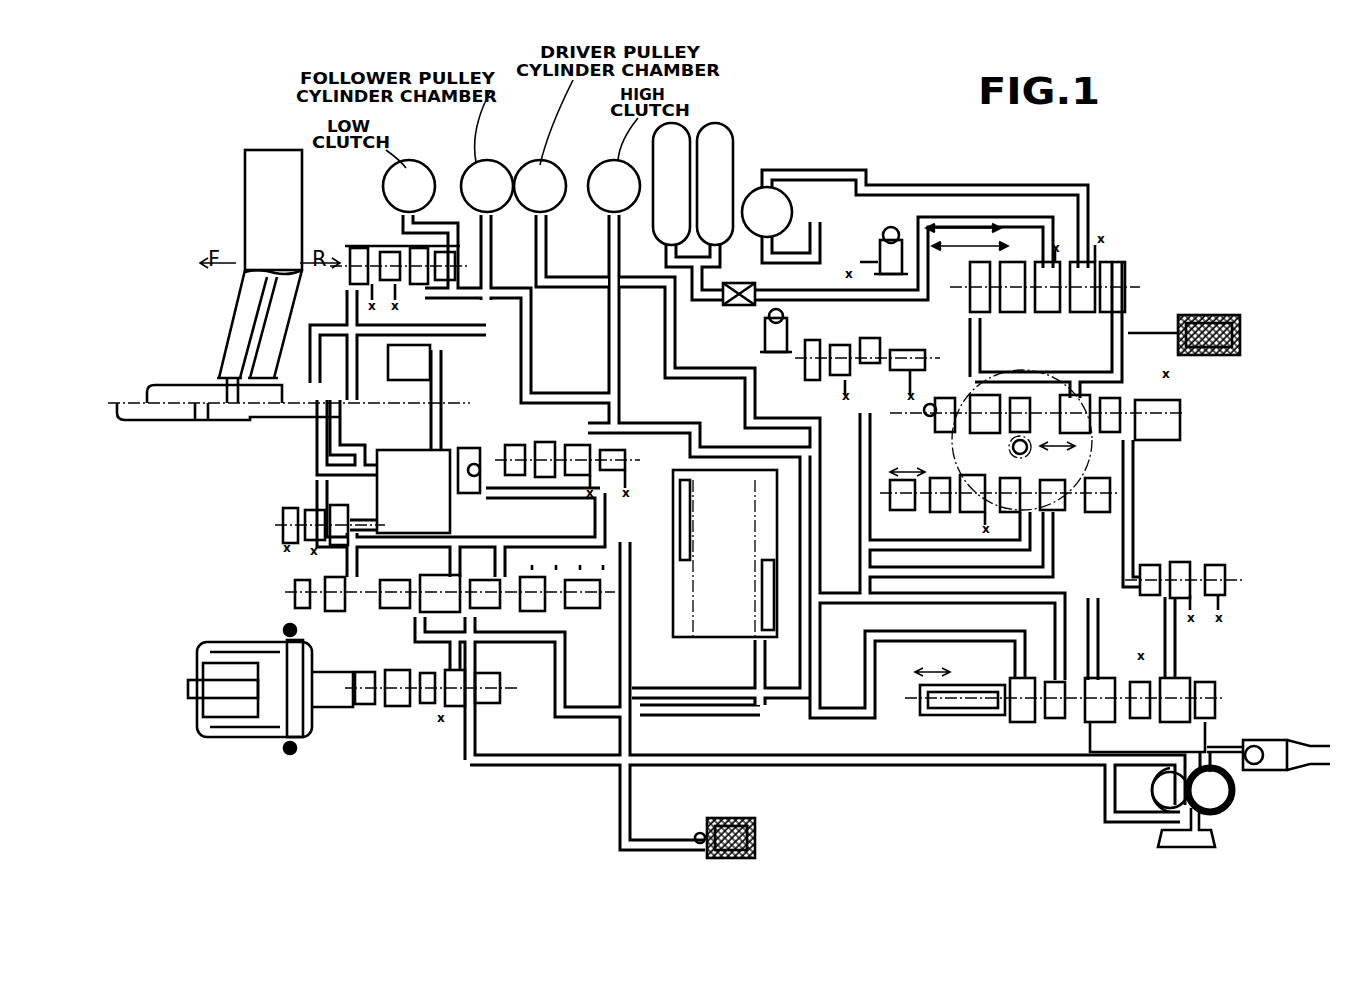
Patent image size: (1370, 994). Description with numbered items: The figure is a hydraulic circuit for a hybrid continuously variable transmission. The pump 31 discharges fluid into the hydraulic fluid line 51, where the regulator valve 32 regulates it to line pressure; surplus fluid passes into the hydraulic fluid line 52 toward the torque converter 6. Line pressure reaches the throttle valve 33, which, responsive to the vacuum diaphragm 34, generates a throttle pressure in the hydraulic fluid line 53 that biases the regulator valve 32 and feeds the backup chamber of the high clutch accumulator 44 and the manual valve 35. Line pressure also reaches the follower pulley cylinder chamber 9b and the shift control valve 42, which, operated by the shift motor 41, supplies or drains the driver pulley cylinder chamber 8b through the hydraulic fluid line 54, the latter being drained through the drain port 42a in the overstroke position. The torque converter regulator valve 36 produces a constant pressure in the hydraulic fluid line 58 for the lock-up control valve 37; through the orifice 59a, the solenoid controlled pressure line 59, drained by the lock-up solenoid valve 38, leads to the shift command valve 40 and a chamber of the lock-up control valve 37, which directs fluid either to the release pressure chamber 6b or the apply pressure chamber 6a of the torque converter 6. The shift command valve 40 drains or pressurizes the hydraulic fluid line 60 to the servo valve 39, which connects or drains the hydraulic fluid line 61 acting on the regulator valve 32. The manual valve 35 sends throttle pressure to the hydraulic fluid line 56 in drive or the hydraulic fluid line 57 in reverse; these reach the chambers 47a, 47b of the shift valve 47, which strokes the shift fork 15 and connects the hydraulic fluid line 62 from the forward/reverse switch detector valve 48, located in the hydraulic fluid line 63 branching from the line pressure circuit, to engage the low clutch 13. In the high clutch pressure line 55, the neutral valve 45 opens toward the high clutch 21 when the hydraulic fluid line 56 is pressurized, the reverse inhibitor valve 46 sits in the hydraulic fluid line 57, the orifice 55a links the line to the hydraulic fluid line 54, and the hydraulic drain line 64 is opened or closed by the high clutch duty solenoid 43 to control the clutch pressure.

The torque converter 6 is at (750, 187).
The apply pressure chamber 6a is at (760, 236).
The release pressure chamber 6b is at (790, 200).
The driver pulley cylinder chamber 8b is at (536, 172).
The follower pulley cylinder chamber 9b is at (480, 172).
The low clutch 13 is at (400, 172).
The shift fork 15 is at (262, 150).
The high clutch 21 is at (602, 166).
The pump 31 is at (1225, 808).
The regulator valve 32 is at (956, 722).
The throttle valve 33 is at (410, 708).
The vacuum diaphragm 34 is at (262, 745).
The manual valve 35 is at (372, 612).
The torque converter regulator valve 36 is at (842, 342).
The lock-up control valve 37 is at (1106, 260).
The lock-up solenoid valve 38 is at (1198, 312).
The servo valve 39 is at (1180, 562).
The shift command valve 40 is at (1182, 430).
The shift motor 41 is at (952, 438).
The shift control valve 42 is at (1060, 512).
The drain port 42a is at (985, 518).
The high clutch duty solenoid 43 is at (756, 840).
The high clutch accumulator 44 is at (673, 628).
The neutral valve 45 is at (548, 445).
The reverse inhibitor valve 46 is at (296, 512).
The shift valve 47 is at (445, 410).
The chamber 47a is at (424, 400).
The chamber 47b is at (409, 362).
The forward/reverse switch detector valve 48 is at (365, 245).
The hydraulic fluid line 51 is at (527, 370).
The hydraulic fluid line 52 is at (822, 420).
The hydraulic fluid line 53 is at (536, 638).
The hydraulic fluid line 54 is at (818, 548).
The high clutch pressure line 55 is at (608, 345).
The orifice 55a is at (698, 690).
The hydraulic fluid line 56 is at (540, 500).
The hydraulic fluid line 57 is at (338, 475).
The hydraulic fluid line 58 is at (975, 345).
The solenoid controlled pressure line 59 is at (1112, 352).
The orifice 59a is at (1085, 378).
The hydraulic fluid line 60 is at (1136, 508).
The hydraulic fluid line 61 is at (1176, 638).
The hydraulic fluid line 62 is at (350, 378).
The hydraulic fluid line 63 is at (445, 305).
The hydraulic drain line 64 is at (620, 815).